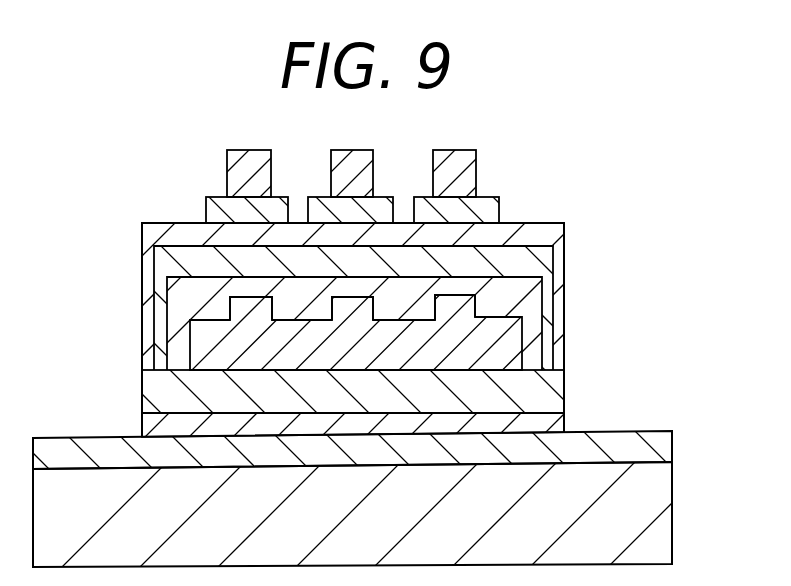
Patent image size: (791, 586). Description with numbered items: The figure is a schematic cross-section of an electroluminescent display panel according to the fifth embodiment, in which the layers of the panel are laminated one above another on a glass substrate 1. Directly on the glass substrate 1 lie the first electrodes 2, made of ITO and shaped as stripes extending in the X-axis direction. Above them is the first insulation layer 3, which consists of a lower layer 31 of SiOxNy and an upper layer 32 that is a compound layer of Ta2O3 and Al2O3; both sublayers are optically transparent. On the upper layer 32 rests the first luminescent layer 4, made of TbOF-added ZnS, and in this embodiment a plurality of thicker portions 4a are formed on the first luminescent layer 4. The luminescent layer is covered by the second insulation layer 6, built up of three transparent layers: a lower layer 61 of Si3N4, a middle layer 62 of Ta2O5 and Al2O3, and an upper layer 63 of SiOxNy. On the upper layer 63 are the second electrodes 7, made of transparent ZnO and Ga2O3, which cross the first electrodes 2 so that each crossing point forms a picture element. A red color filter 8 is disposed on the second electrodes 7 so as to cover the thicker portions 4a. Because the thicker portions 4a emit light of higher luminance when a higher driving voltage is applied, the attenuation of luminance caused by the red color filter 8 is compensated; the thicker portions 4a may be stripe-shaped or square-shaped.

The glass substrate 1 is at (640, 508).
The first electrodes 2 is at (638, 447).
The first insulation layer 3 is at (394, 393).
The lower layer 31 is at (540, 422).
The upper layer 32 is at (542, 382).
The first luminescent layer 4 is at (510, 333).
The thicker portions 4a is at (467, 308).
The second insulation layer 6 is at (395, 261).
The lower layer 61 is at (523, 285).
The middle layer 62 is at (535, 252).
The upper layer 63 is at (548, 228).
The second electrodes 7 is at (477, 205).
The red color filter 8 is at (463, 167).